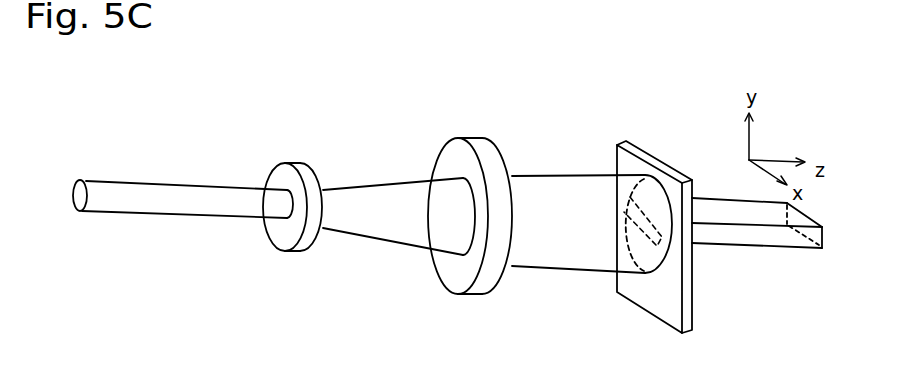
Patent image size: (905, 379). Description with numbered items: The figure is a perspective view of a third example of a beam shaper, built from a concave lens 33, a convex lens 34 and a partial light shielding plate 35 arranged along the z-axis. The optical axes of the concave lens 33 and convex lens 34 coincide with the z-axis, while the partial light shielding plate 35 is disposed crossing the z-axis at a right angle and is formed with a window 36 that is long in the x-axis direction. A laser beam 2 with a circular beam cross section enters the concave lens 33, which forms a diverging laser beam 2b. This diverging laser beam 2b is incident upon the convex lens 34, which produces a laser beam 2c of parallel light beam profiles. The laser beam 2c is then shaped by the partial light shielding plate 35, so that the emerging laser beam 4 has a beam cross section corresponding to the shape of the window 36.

The laser beam 2 is at (167, 184).
The diverging laser beam 2b is at (372, 187).
The laser beam of parallel light beam profiles 2c is at (549, 177).
The concave lens 33 is at (287, 252).
The convex lens 34 is at (467, 296).
The partial light shielding plate 35 is at (642, 308).
The window 36 is at (655, 208).
The laser beam 4 is at (762, 248).